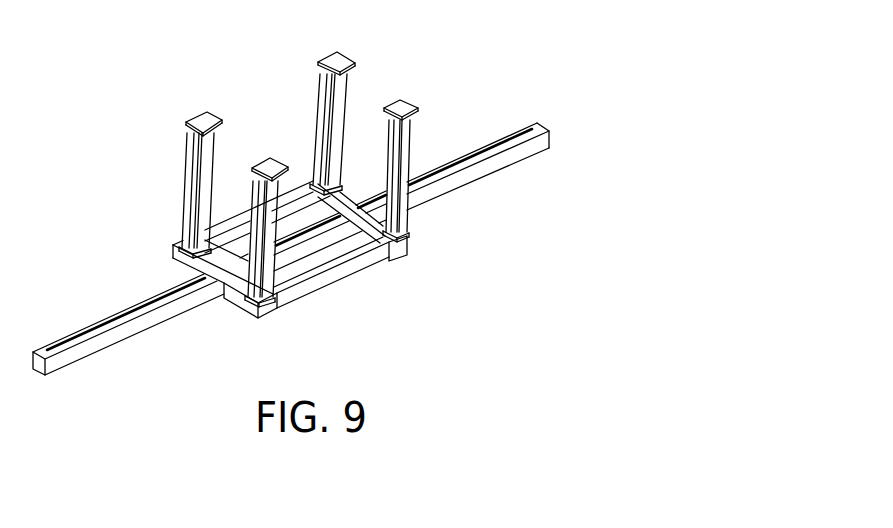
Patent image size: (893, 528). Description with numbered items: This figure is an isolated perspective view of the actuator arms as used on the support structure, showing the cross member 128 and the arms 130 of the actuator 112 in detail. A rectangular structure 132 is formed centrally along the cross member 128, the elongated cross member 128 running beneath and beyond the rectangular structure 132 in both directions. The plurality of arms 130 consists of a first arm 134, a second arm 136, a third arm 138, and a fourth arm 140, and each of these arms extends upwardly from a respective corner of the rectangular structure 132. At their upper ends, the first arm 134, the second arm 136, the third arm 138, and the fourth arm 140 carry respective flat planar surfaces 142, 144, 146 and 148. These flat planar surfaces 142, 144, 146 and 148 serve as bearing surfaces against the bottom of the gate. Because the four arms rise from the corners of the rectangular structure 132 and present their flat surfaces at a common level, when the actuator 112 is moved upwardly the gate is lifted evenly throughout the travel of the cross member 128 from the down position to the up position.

The actuator 112 is at (450, 271).
The cross member 128 is at (480, 152).
The arms 130 is at (384, 60).
The rectangular structure 132 is at (330, 282).
The first arm 134 is at (190, 206).
The second arm 136 is at (323, 101).
The third arm 138 is at (251, 306).
The fourth arm 140 is at (408, 223).
The flat planar surface 142 is at (205, 119).
The flat planar surface 144 is at (338, 62).
The flat planar surface 146 is at (291, 141).
The flat planar surface 148 is at (402, 106).